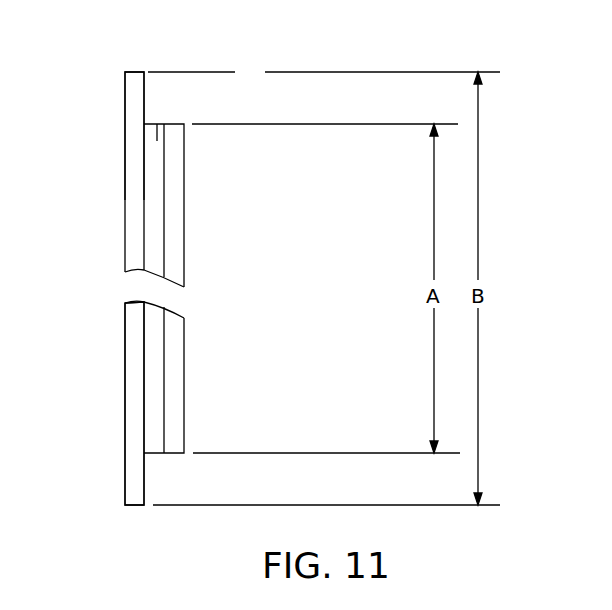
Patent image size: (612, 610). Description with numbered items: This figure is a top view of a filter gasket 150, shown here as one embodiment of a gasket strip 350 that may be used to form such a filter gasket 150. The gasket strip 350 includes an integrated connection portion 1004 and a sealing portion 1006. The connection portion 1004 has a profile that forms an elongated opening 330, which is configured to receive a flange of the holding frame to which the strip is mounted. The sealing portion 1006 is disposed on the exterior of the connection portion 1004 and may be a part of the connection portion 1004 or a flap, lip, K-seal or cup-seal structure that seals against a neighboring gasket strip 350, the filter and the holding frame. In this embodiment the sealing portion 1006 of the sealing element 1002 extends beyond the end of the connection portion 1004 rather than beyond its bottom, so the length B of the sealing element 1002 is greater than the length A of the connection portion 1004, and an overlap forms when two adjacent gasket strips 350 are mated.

The filter gasket 150 is at (325, 58).
The elongated opening 330 is at (157, 124).
The gasket strip 350 is at (114, 368).
The sealing element 1002 is at (124, 188).
The connection portion 1004 is at (194, 223).
The sealing portion 1006 is at (121, 112).